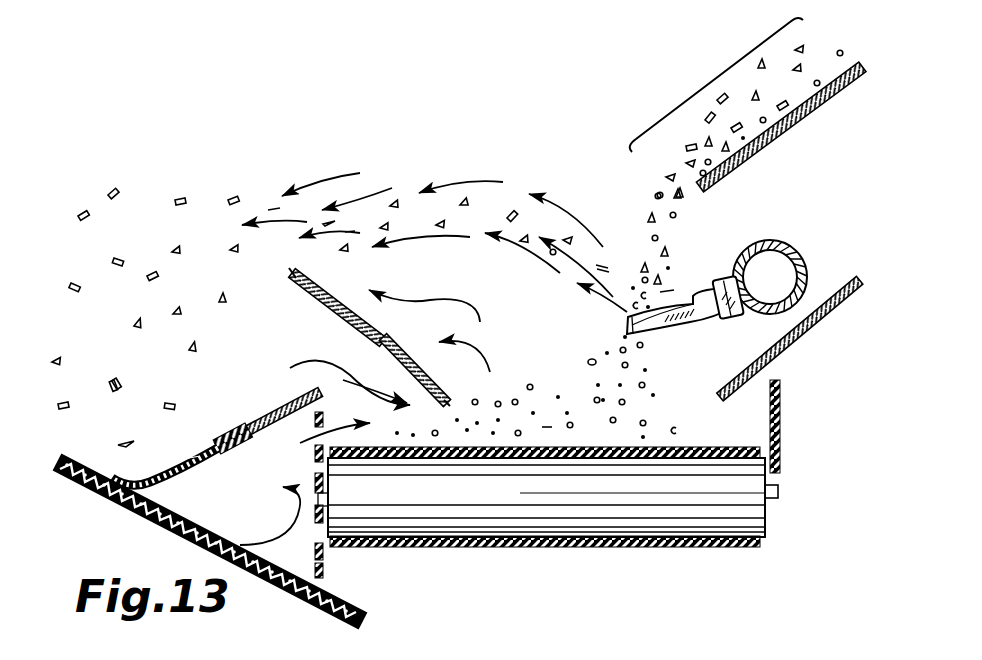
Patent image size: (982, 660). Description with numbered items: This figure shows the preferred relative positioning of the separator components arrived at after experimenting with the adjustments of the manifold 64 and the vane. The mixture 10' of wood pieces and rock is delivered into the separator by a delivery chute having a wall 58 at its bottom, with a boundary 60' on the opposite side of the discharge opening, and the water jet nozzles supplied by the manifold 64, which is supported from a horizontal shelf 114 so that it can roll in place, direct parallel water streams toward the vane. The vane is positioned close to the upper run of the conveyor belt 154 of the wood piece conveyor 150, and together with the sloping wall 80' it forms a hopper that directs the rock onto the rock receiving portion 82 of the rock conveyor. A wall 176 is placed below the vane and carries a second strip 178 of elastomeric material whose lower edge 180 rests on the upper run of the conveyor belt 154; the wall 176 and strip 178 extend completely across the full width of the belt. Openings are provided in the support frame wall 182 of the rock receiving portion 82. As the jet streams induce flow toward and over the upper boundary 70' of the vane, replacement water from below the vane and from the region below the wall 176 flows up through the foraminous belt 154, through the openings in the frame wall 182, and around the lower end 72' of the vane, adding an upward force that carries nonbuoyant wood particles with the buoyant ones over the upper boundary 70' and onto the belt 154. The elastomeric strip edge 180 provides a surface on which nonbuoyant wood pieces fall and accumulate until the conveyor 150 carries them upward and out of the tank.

The mixture 10' is at (736, 108).
The chute wall 58 is at (752, 148).
The manifold 64 is at (793, 243).
The sloping wall 80' is at (790, 338).
The upper boundary of vane 70' is at (265, 273).
The opposite boundary of delivery chute 60' is at (310, 302).
The horizontal shelf 114 is at (449, 403).
The lower end of vane 72' is at (452, 453).
The wall 176 is at (283, 406).
The second strip of elastomeric material 178 is at (145, 507).
The lower edge of strip 180 is at (125, 480).
The wood piece conveyor 150 is at (210, 560).
The endless conveyor belt 154 is at (158, 517).
The support frame wall 182 is at (330, 552).
The rock receiving portion of rock conveyor 82 is at (566, 547).